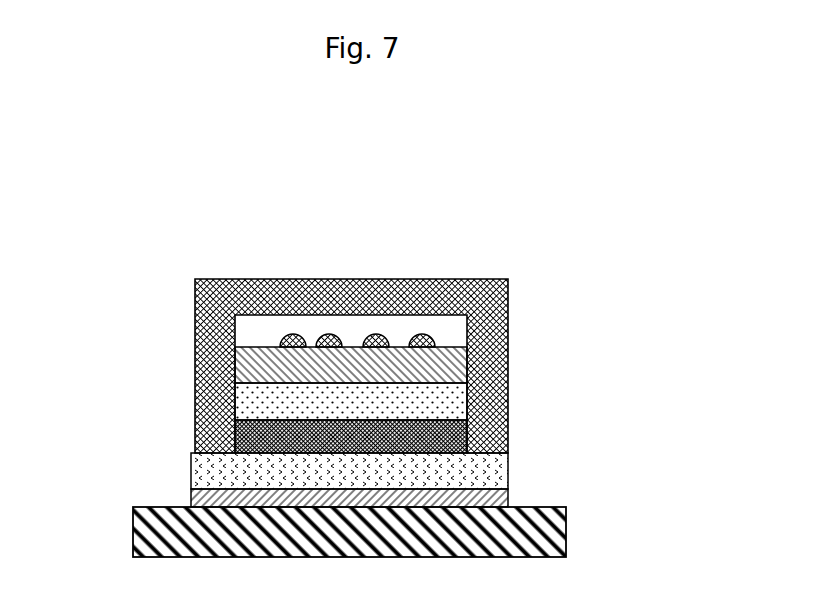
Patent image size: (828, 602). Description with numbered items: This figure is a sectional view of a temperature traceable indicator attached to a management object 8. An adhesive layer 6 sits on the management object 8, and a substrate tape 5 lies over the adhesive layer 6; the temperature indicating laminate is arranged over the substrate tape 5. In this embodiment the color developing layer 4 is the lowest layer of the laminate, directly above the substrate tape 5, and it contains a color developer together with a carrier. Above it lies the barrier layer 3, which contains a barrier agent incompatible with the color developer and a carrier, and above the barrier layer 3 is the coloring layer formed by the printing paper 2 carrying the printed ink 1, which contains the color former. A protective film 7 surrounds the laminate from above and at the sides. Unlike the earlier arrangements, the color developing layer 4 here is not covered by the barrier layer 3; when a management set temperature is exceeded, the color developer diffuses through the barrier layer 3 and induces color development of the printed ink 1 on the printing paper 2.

The printed ink 1 is at (291, 333).
The printing paper 2 is at (443, 373).
The barrier layer 3 is at (243, 402).
The color developing layer 4 is at (452, 438).
The substrate tape 5 is at (197, 468).
The adhesive layer 6 is at (500, 498).
The protective film 7 is at (508, 279).
The management object 8 is at (548, 537).